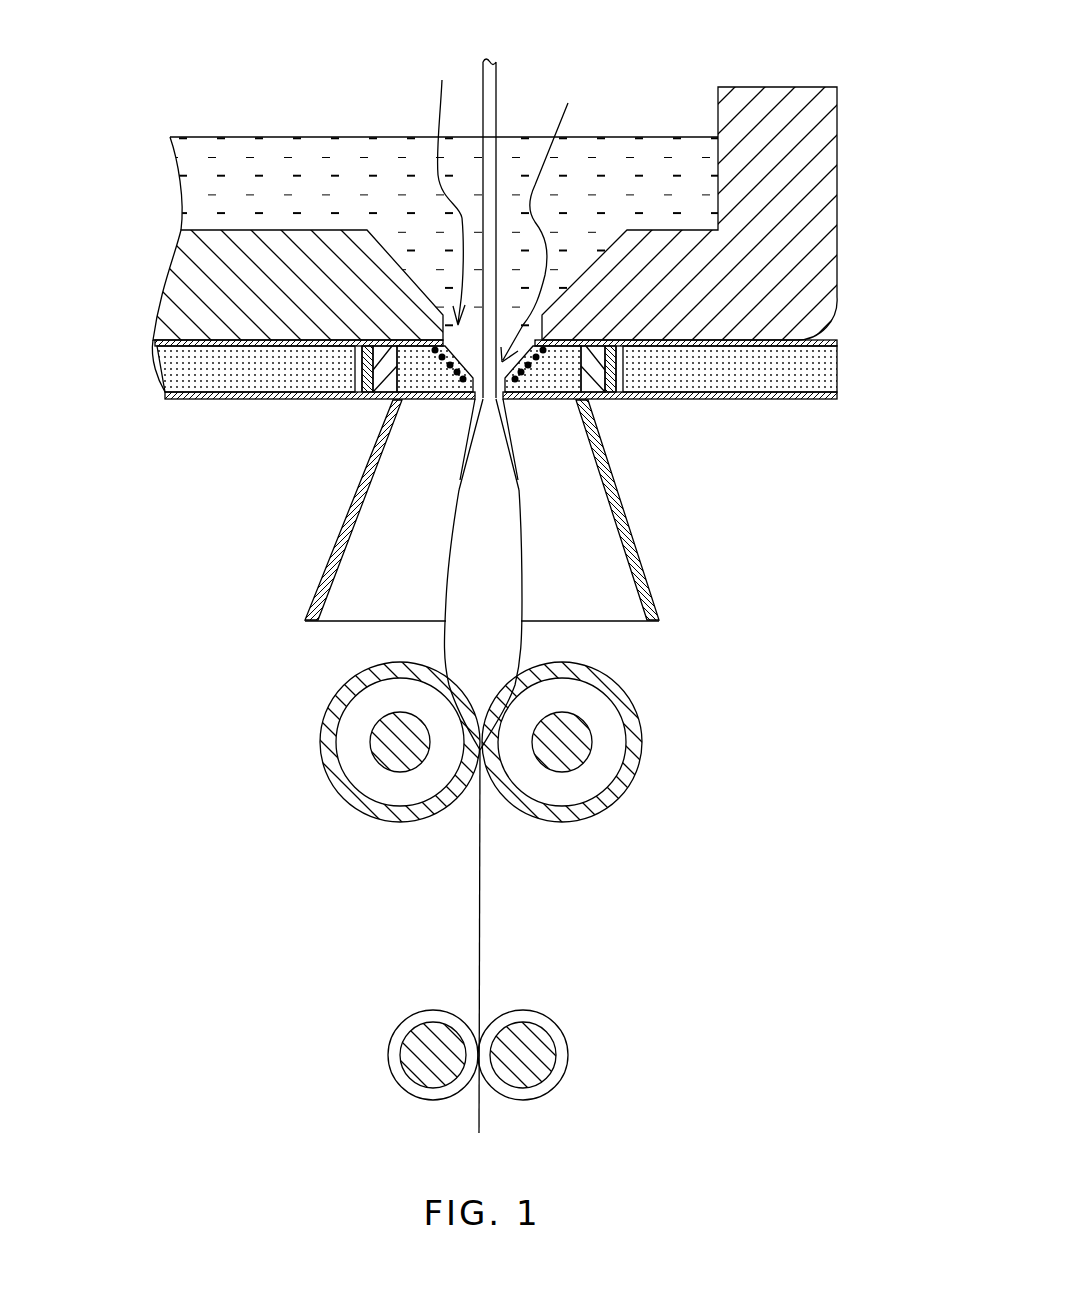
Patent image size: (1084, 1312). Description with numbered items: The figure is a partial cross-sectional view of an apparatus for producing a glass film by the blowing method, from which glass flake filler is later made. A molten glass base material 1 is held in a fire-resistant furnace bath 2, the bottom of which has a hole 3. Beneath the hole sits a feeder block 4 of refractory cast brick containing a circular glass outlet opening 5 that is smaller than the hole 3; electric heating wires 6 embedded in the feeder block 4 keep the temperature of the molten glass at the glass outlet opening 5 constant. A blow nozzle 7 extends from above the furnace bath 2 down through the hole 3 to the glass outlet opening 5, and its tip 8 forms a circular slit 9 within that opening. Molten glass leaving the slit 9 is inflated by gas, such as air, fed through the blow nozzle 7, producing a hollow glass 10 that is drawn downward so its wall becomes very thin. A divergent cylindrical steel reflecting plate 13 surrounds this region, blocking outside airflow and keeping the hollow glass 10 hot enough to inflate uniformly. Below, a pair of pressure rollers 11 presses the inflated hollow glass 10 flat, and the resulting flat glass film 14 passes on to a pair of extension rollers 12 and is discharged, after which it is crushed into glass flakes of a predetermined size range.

The molten glass base material 1 is at (628, 157).
The fire-resistant furnace bath 2 is at (190, 272).
The hole 3 is at (448, 182).
The feeder block 4 is at (422, 372).
The glass outlet opening 5 is at (539, 215).
The electric heating wires 6 is at (370, 483).
The blow nozzle 7 is at (489, 60).
The tip 8 is at (452, 530).
The circular slit 9 is at (505, 400).
The hollow glass 10 is at (473, 400).
The pressure rollers 11 is at (642, 736).
The extension rollers 12 is at (560, 1040).
The reflecting plate 13 is at (330, 555).
The flat glass film 14 is at (480, 920).